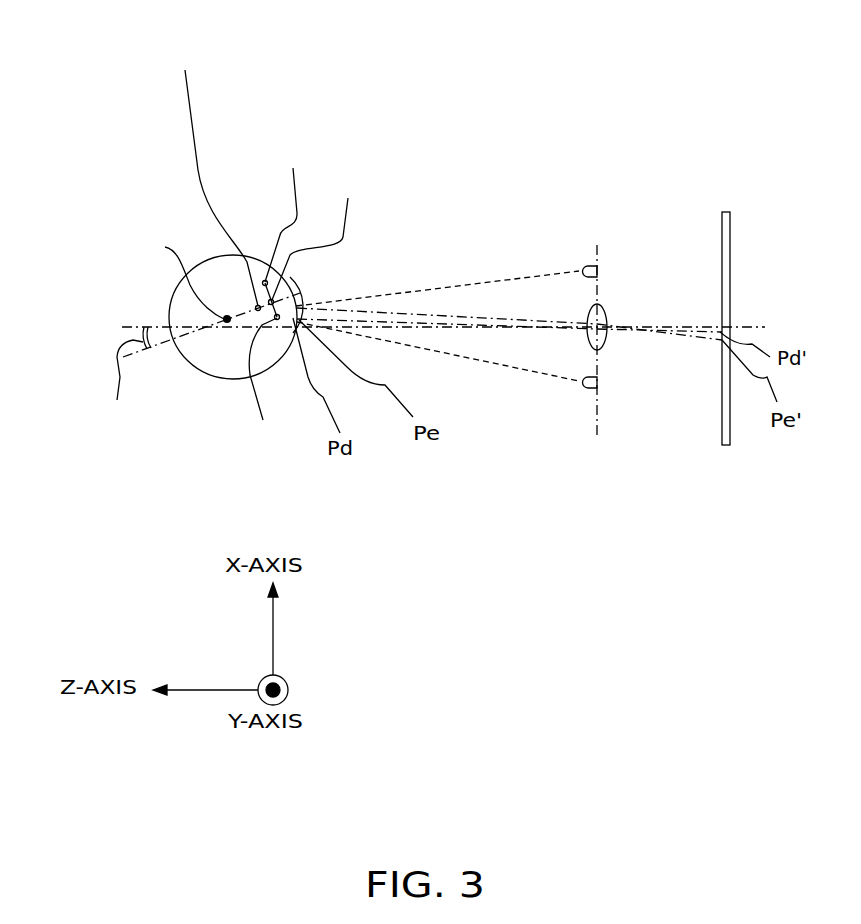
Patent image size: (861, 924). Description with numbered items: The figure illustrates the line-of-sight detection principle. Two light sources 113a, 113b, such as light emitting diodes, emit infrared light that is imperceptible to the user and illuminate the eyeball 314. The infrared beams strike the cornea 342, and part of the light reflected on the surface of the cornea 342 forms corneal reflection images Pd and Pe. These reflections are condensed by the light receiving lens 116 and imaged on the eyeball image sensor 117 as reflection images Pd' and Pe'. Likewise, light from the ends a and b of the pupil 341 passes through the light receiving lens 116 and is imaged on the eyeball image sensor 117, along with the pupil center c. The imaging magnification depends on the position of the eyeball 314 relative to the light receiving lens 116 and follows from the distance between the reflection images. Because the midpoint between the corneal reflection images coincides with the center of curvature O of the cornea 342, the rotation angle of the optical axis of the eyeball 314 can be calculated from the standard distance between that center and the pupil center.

The eyeball 314 is at (187, 260).
The pupil 341 is at (265, 282).
The cornea 342 is at (297, 284).
The light source 113a is at (592, 388).
The light source 113b is at (598, 267).
The light receiving lens 116 is at (594, 349).
The eyeball image sensor 117 is at (722, 447).